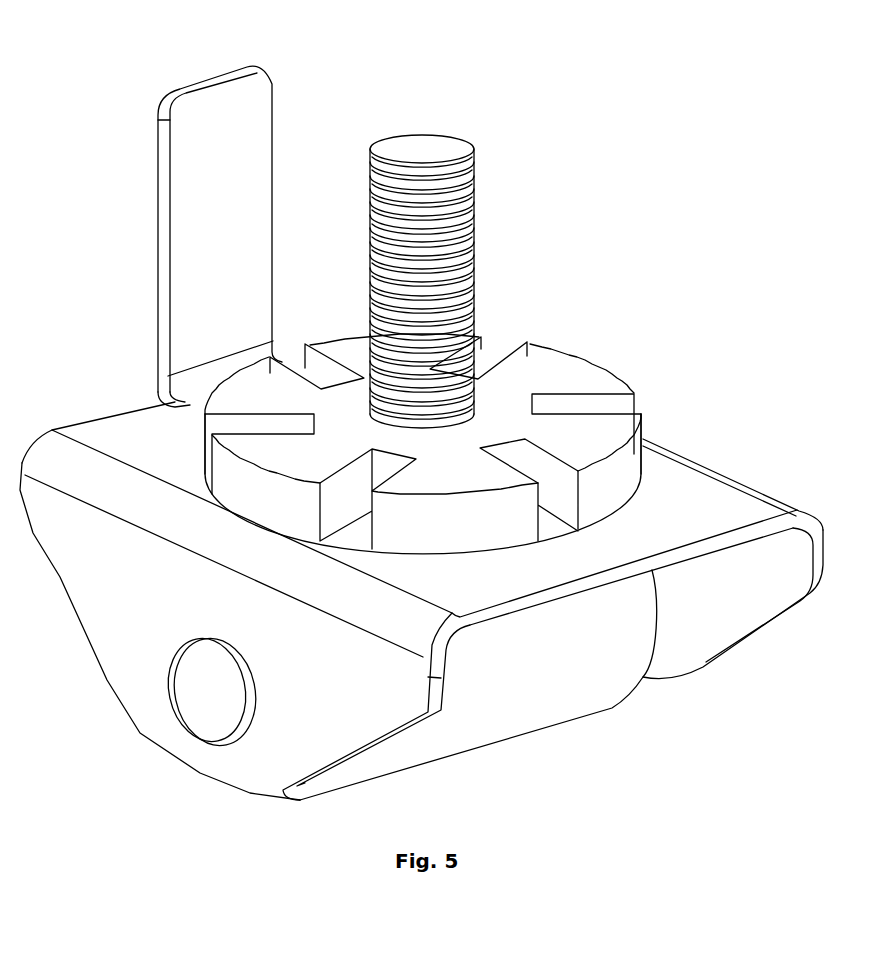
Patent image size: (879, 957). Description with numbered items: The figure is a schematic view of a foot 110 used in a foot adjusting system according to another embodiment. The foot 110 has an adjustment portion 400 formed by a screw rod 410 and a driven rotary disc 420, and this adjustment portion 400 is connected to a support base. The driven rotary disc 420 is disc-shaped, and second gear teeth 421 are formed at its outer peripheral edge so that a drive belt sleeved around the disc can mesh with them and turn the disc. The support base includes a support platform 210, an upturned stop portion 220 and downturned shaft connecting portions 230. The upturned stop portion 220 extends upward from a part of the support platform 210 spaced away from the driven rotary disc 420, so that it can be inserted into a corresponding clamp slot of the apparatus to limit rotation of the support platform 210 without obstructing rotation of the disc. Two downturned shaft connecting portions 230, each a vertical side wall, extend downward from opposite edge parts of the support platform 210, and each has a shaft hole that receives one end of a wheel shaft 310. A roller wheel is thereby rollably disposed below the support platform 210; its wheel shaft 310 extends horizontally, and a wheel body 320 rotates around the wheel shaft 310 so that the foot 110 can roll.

The foot 110 is at (97, 40).
The support platform 210 is at (692, 495).
The upturned stop portion 220 is at (192, 128).
The downturned shaft connecting portion 230 is at (160, 613).
The wheel shaft 310 is at (218, 703).
The wheel body 320 is at (547, 688).
The adjustment portion 400 is at (652, 165).
The screw rod 410 is at (443, 230).
The driven rotary disc 420 is at (528, 375).
The second gear teeth 421 is at (556, 484).